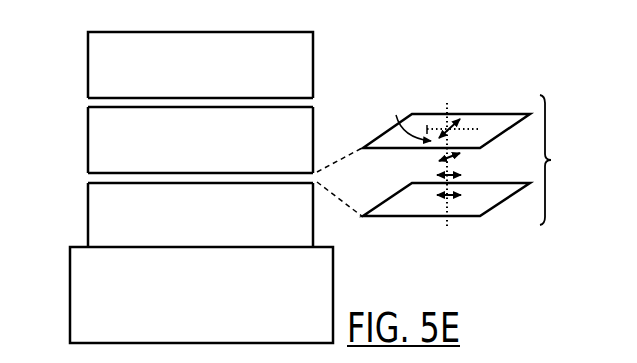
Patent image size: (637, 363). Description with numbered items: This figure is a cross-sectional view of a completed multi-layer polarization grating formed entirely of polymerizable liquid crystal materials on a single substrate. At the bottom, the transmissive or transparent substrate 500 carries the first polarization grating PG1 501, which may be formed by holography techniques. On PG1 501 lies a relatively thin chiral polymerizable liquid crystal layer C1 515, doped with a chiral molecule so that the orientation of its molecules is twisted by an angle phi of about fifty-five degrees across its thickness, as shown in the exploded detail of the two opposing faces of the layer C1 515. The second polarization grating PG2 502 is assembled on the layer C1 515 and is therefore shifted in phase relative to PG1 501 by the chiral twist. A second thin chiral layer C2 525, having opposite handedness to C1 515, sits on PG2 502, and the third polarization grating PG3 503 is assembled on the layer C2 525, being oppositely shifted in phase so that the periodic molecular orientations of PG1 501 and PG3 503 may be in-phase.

The substrate 500 is at (178, 326).
The first polarization grating PG1 501 is at (178, 240).
The second polarization grating PG2 502 is at (178, 163).
The third polarization grating PG3 503 is at (178, 90).
The chiral polymerizable liquid crystal layer C1 515 is at (87, 177).
The chiral polymerizable liquid crystal layer C2 525 is at (87, 103).